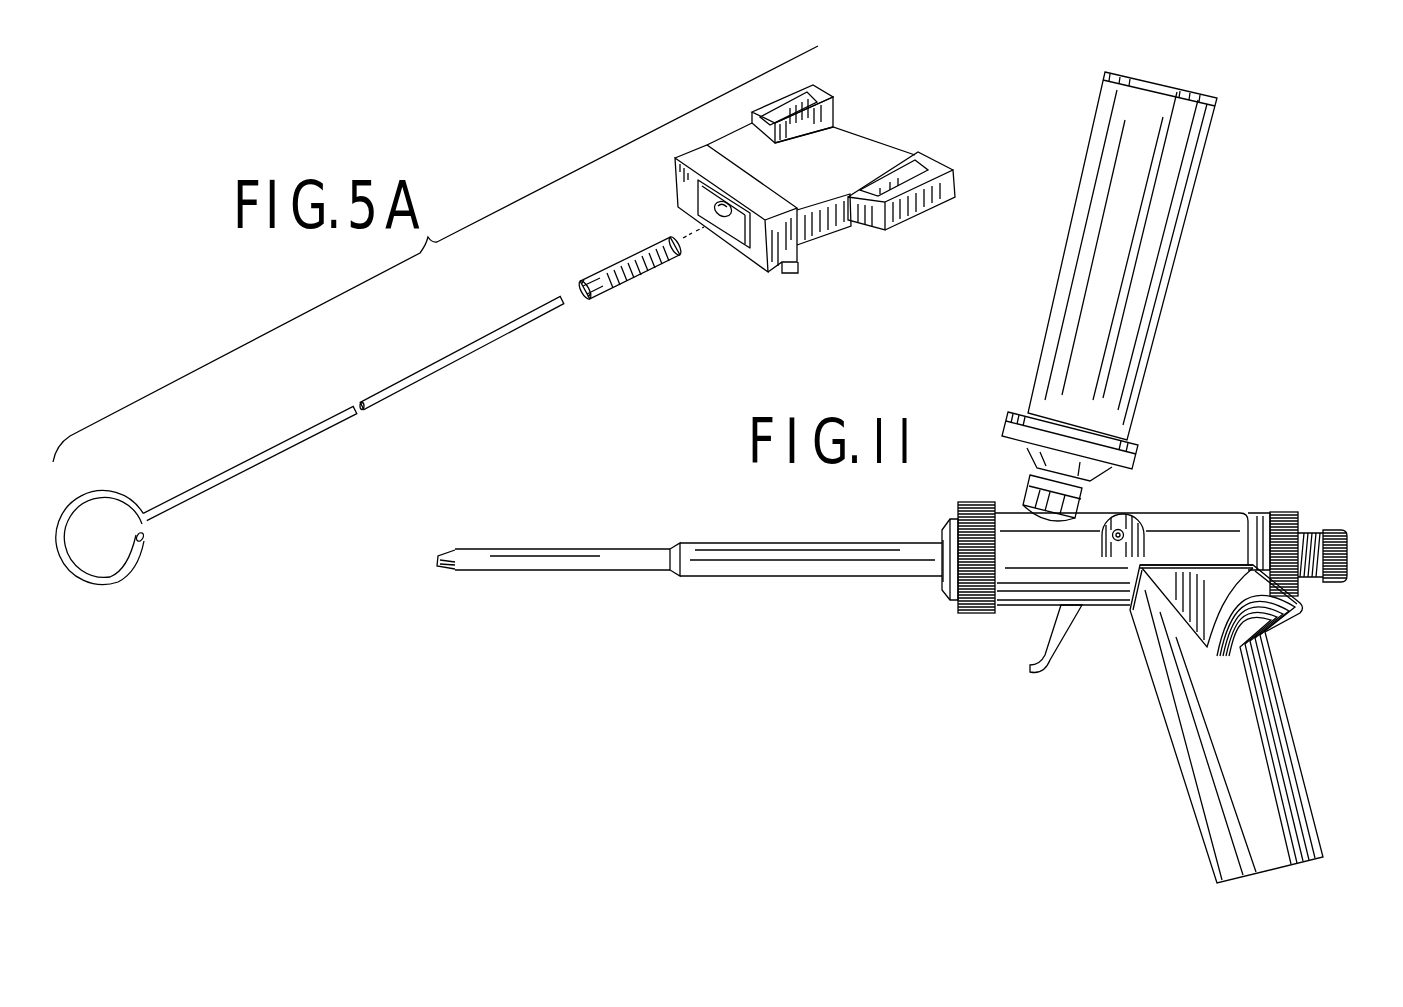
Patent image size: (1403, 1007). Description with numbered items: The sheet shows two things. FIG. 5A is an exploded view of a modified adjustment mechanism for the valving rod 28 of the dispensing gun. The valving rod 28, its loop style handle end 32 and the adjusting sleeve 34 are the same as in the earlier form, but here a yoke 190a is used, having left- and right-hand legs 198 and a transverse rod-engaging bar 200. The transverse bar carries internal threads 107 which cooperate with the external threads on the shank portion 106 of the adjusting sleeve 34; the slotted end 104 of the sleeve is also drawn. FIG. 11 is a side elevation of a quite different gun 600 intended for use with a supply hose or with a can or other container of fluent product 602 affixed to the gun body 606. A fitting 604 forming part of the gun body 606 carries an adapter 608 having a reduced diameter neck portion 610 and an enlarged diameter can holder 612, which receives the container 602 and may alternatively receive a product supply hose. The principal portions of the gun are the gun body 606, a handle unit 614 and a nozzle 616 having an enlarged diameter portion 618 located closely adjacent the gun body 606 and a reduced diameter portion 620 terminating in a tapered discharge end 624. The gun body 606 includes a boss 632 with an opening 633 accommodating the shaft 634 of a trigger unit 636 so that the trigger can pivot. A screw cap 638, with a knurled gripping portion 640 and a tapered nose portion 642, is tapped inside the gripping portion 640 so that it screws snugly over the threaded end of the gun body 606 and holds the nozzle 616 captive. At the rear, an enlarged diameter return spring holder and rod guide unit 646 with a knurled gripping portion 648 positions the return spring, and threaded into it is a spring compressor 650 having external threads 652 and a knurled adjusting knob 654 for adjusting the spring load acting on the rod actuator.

In FIG. 5A, the valving rod 28 is at (453, 368).
In FIG. 5A, the loop style handle end 32 is at (150, 553).
In FIG. 5A, the adjusting sleeve 34 is at (651, 277).
In FIG. 5A, the prongs 104 is at (579, 280).
In FIG. 5A, the shank portion 106 is at (627, 252).
In FIG. 5A, the internal threads 107 is at (716, 206).
In FIG. 5A, the left- and right-hand legs 198 is at (837, 120).
In FIG. 5A, the transverse rod-engaging bar 200 is at (757, 258).
In FIG. 5A, the yoke 190a is at (868, 242).
In FIG. 11, the gun 600 is at (1049, 688).
In FIG. 11, the container of fluent product 602 is at (1199, 275).
In FIG. 11, the fitting 604 is at (1030, 503).
In FIG. 11, the gun body 606 is at (1215, 508).
In FIG. 11, the adapter 608 is at (1032, 436).
In FIG. 11, the reduced diameter neck portion 610 is at (1073, 490).
In FIG. 11, the can holder 612 is at (1143, 453).
In FIG. 11, the handle unit 614 is at (1267, 728).
In FIG. 11, the nozzle 616 is at (681, 588).
In FIG. 11, the enlarged diameter portion 618 is at (813, 550).
In FIG. 11, the reduced diameter portion 620 is at (558, 557).
In FIG. 11, the tapered discharge end 624 is at (453, 563).
In FIG. 11, the boss 632 is at (1132, 548).
In FIG. 11, the opening 633 is at (1118, 541).
In FIG. 11, the shaft 634 is at (1105, 533).
In FIG. 11, the trigger unit 636 is at (1070, 650).
In FIG. 11, the screw cap 638 is at (945, 503).
In FIG. 11, the knurled gripping portion 640 is at (975, 587).
In FIG. 11, the tapered nose portion 642 is at (942, 590).
In FIG. 11, the return spring holder and rod guide unit 646 is at (1315, 526).
In FIG. 11, the knurled gripping portion 648 is at (1285, 515).
In FIG. 11, the spring compressor 650 is at (1364, 538).
In FIG. 11, the external threads 652 is at (1312, 582).
In FIG. 11, the adjusting knob 654 is at (1330, 580).